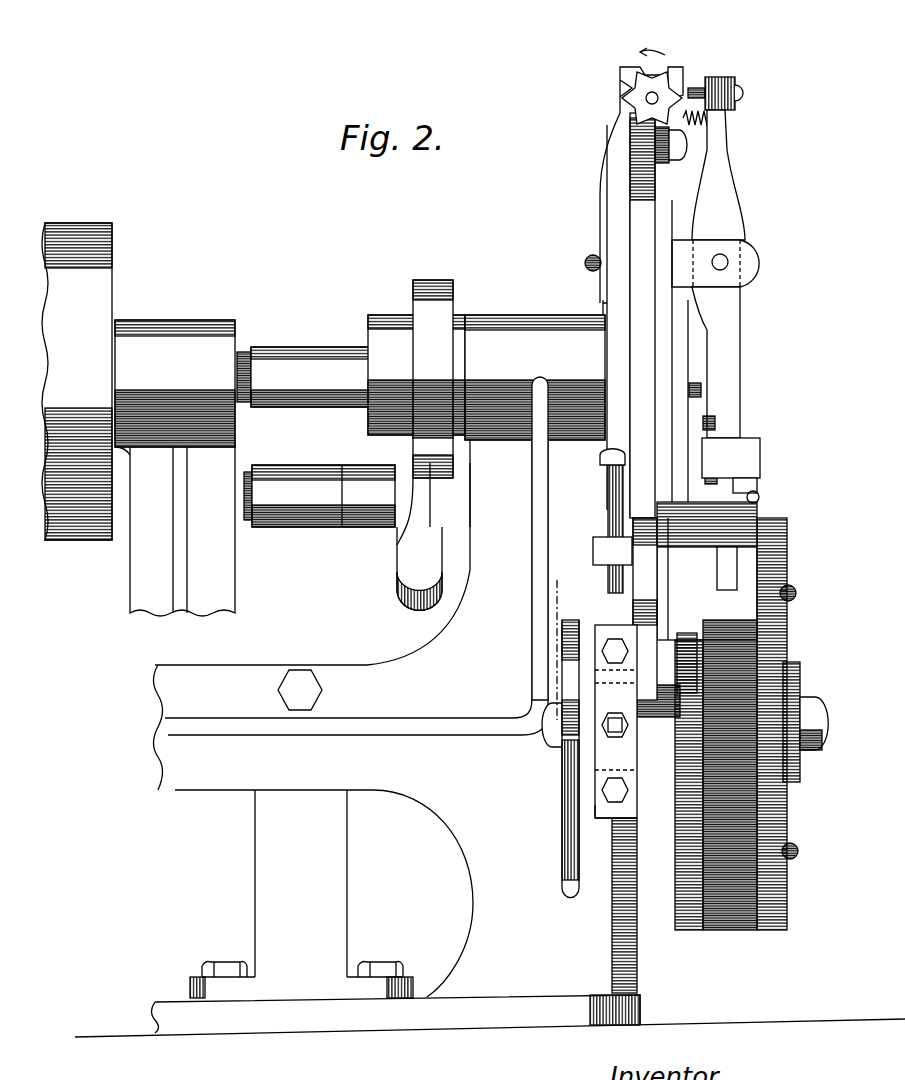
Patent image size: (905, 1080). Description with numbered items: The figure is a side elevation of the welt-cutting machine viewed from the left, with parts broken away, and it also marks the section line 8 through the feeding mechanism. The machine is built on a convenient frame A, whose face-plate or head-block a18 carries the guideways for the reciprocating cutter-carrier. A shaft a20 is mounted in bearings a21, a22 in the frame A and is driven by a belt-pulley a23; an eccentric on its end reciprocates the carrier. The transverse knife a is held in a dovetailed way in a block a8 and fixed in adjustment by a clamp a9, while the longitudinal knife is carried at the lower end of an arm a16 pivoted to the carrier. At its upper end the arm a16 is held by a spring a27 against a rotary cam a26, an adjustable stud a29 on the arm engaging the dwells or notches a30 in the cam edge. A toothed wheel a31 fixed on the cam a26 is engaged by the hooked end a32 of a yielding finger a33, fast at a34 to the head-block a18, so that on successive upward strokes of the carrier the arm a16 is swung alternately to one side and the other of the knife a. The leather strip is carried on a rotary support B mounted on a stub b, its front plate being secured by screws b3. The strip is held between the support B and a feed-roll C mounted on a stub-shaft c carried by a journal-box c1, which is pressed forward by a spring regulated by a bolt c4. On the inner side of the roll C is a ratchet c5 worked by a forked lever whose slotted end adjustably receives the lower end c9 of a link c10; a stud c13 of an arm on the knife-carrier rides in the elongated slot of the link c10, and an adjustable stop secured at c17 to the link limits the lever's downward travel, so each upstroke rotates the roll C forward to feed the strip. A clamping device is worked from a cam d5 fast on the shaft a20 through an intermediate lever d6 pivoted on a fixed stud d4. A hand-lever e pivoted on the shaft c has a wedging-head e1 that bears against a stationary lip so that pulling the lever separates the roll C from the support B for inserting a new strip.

The frame A is at (385, 705).
The transverse cutter a is at (733, 573).
The block a8 is at (760, 455).
The clamp a9 is at (753, 500).
The arm a16 is at (733, 213).
The head-block a18 is at (577, 313).
The shaft a20 is at (265, 347).
The bearing a21 is at (503, 313).
The bearing a22 is at (235, 318).
The belt-pulley a23 is at (112, 270).
The rotary cam a26 is at (672, 64).
The spring a27 is at (712, 128).
The adjustable stud a29 is at (705, 93).
The dwells or notches a30 is at (683, 70).
The toothed wheel a31 is at (625, 67).
The hooked end a32 is at (620, 97).
The yielding finger a33 is at (601, 185).
The fastening point of finger a34 is at (590, 260).
The rotary support B is at (785, 625).
The stub b is at (828, 720).
The screws b3 is at (790, 851).
The feed-roll C is at (745, 672).
The stub-shaft c is at (542, 723).
The journal-box c1 is at (590, 792).
The bolt c4 is at (610, 733).
The ratchet c5 is at (693, 787).
The lower end of link c9 is at (650, 697).
The link c10 is at (640, 337).
The stud c13 is at (683, 160).
The securing point of stop c17 is at (603, 545).
The fixed stud d4 is at (250, 470).
The cam d5 is at (413, 285).
The intermediate lever d6 is at (410, 606).
The hand-lever e is at (565, 852).
The wedging-head e1 is at (573, 620).
The section line 8 is at (517, 602).